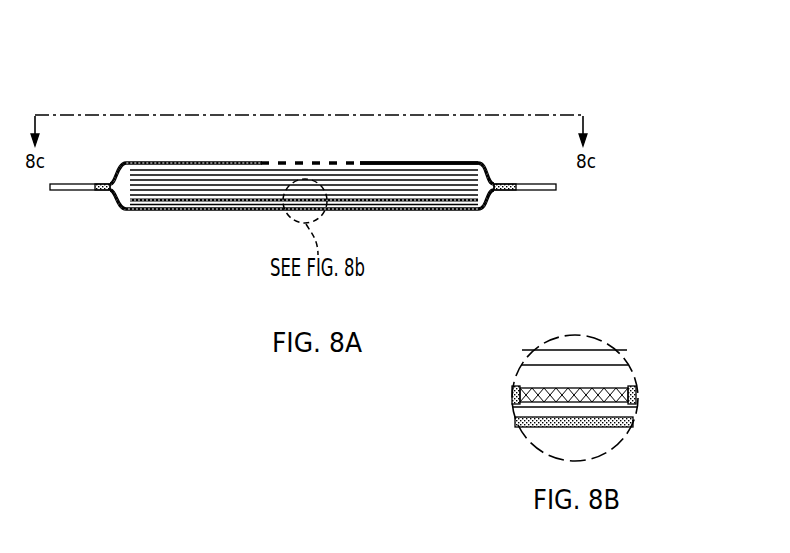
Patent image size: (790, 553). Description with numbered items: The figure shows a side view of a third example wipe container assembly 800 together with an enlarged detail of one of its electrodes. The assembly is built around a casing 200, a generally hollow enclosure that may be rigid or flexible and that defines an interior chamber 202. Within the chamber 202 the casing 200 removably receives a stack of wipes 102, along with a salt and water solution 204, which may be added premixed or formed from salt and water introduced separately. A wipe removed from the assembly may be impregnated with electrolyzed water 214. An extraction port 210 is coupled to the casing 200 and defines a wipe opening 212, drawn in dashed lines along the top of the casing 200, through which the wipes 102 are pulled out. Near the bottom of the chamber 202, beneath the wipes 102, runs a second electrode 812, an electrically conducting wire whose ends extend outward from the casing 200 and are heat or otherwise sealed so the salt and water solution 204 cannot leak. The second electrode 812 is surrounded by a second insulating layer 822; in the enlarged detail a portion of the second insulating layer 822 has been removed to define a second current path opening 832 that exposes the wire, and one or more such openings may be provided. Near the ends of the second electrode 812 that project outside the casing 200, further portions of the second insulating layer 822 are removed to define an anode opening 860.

In FIG. 8A, the third wipe container assembly 800 is at (100, 65).
In FIG. 8B, the third wipe container assembly 800 is at (132, 542).
In FIG. 8A, the wipes 102 is at (197, 188).
In FIG. 8A, the casing 200 is at (123, 205).
In FIG. 8A, the chamber 202 is at (488, 180).
In FIG. 8A, the salt and water solution 204 is at (122, 168).
In FIG. 8A, the electrolyzed water 214 is at (118, 199).
In FIG. 8A, the extraction port 210 is at (367, 162).
In FIG. 8A, the wipe opening 212 is at (327, 162).
In FIG. 8A, the anode opening 860 is at (58, 191).
In FIG. 8B, the second electrode 812 is at (595, 390).
In FIG. 8B, the second insulating layer 822 is at (513, 395).
In FIG. 8B, the second current path opening 832 is at (535, 378).